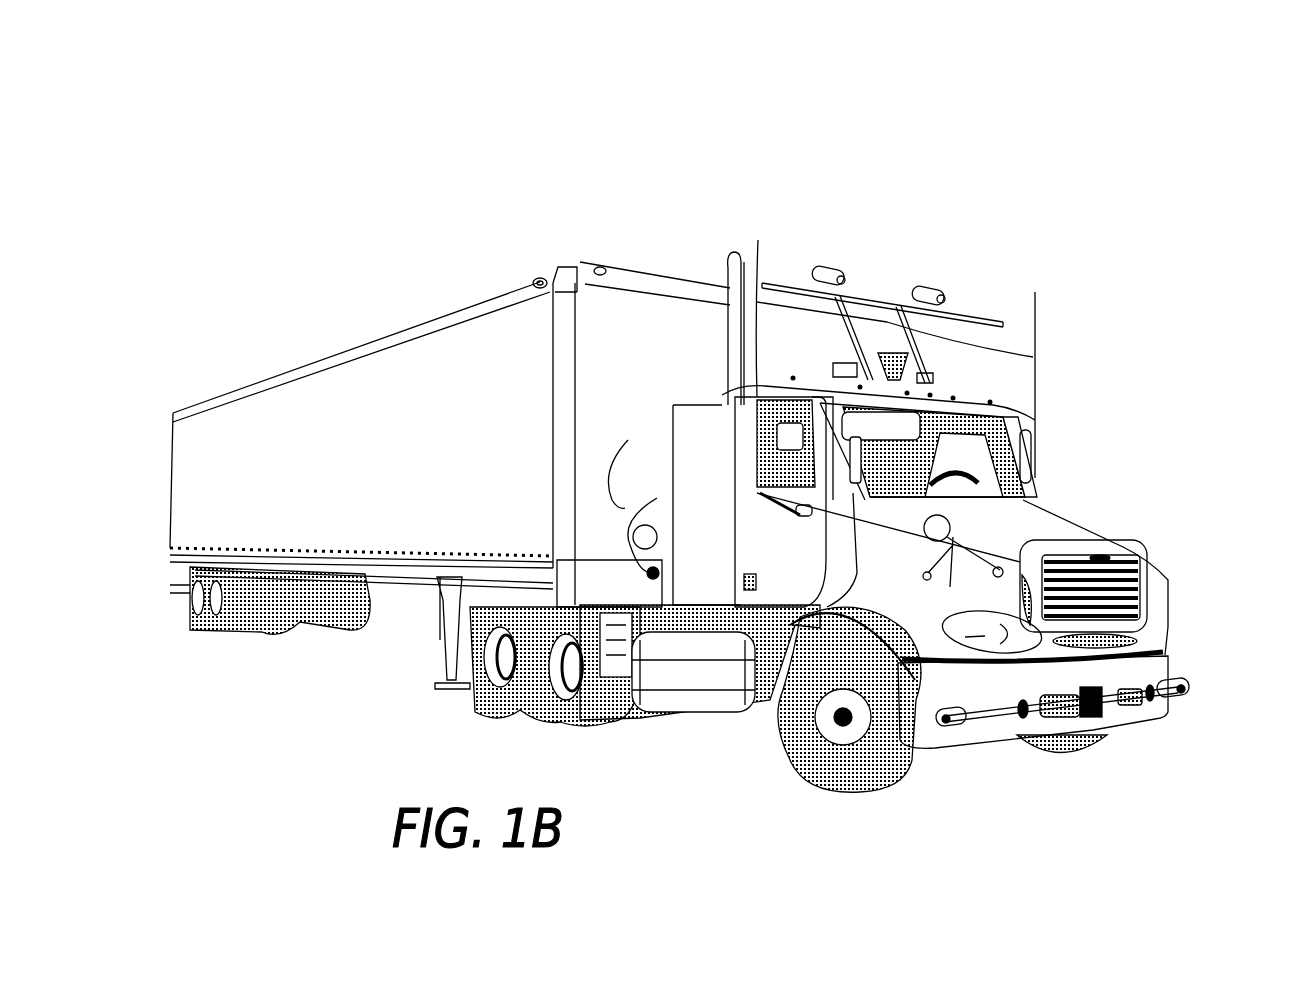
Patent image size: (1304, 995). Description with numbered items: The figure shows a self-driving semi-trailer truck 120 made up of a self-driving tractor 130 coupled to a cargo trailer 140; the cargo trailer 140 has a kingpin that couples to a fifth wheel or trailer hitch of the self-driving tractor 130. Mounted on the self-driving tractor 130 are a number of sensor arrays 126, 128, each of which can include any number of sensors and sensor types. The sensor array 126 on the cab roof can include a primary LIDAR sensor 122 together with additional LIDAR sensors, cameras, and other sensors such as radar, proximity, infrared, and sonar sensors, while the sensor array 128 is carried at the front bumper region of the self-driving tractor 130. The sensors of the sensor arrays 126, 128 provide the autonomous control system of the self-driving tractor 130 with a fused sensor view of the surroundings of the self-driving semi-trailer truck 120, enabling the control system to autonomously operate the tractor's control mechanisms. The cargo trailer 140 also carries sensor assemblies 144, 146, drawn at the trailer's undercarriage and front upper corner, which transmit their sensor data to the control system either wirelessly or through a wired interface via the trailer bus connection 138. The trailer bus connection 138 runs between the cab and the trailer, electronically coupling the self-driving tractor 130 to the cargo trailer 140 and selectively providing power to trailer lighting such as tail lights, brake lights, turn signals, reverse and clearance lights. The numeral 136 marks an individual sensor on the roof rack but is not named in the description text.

The self-driving semi-trailer truck 120 is at (1035, 95).
The primary LIDAR sensor 122 is at (922, 352).
The sensor array 126 is at (767, 203).
The sensor array 128 is at (1212, 723).
The self-driving tractor 130 is at (1170, 565).
The sensor 136 is at (812, 266).
The trailer bus connection 138 is at (635, 492).
The cargo trailer 140 is at (450, 475).
The sensor assembly 144 is at (291, 560).
The sensor assembly 146 is at (536, 279).